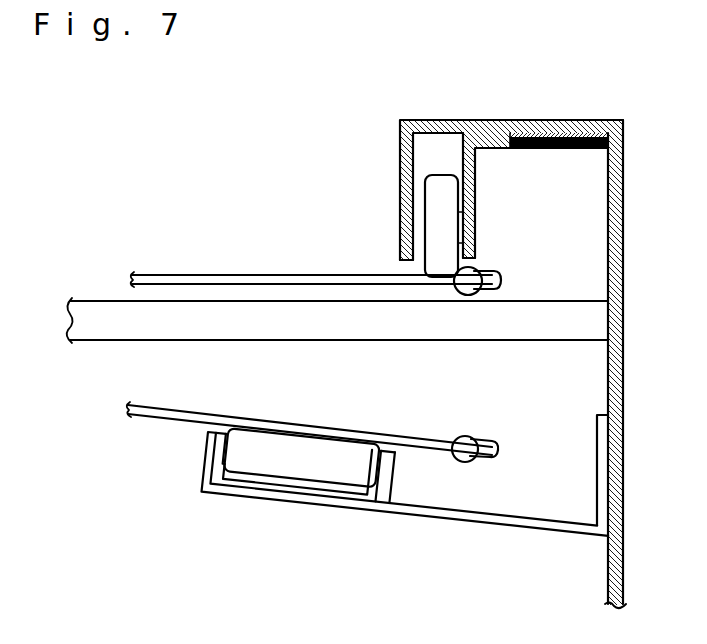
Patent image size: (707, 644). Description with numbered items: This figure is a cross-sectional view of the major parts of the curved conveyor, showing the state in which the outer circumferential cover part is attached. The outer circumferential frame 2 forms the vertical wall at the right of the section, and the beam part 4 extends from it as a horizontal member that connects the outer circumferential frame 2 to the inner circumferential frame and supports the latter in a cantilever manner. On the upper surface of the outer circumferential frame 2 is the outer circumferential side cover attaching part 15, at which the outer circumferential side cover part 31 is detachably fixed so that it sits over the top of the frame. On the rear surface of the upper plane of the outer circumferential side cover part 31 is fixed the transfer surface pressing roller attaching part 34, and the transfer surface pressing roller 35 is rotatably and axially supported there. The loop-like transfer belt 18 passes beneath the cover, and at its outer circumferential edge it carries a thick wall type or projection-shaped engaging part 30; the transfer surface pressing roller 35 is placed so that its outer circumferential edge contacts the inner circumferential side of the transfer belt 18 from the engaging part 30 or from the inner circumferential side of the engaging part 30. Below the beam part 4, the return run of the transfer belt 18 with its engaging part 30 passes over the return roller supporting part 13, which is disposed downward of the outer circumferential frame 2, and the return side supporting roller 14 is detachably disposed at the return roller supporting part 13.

The outer circumferential frame 2 is at (622, 226).
The beam part 4 is at (137, 327).
The return roller supporting part 13 is at (497, 520).
The return side supporting roller 14 is at (289, 470).
The outer circumferential side cover attaching part 15 is at (594, 133).
The transfer belt 18 is at (182, 275).
The engaging part 30 is at (477, 268).
The outer circumferential side cover part 31 is at (430, 125).
The transfer surface pressing roller attaching part 34 is at (490, 140).
The transfer surface pressing roller 35 is at (438, 218).